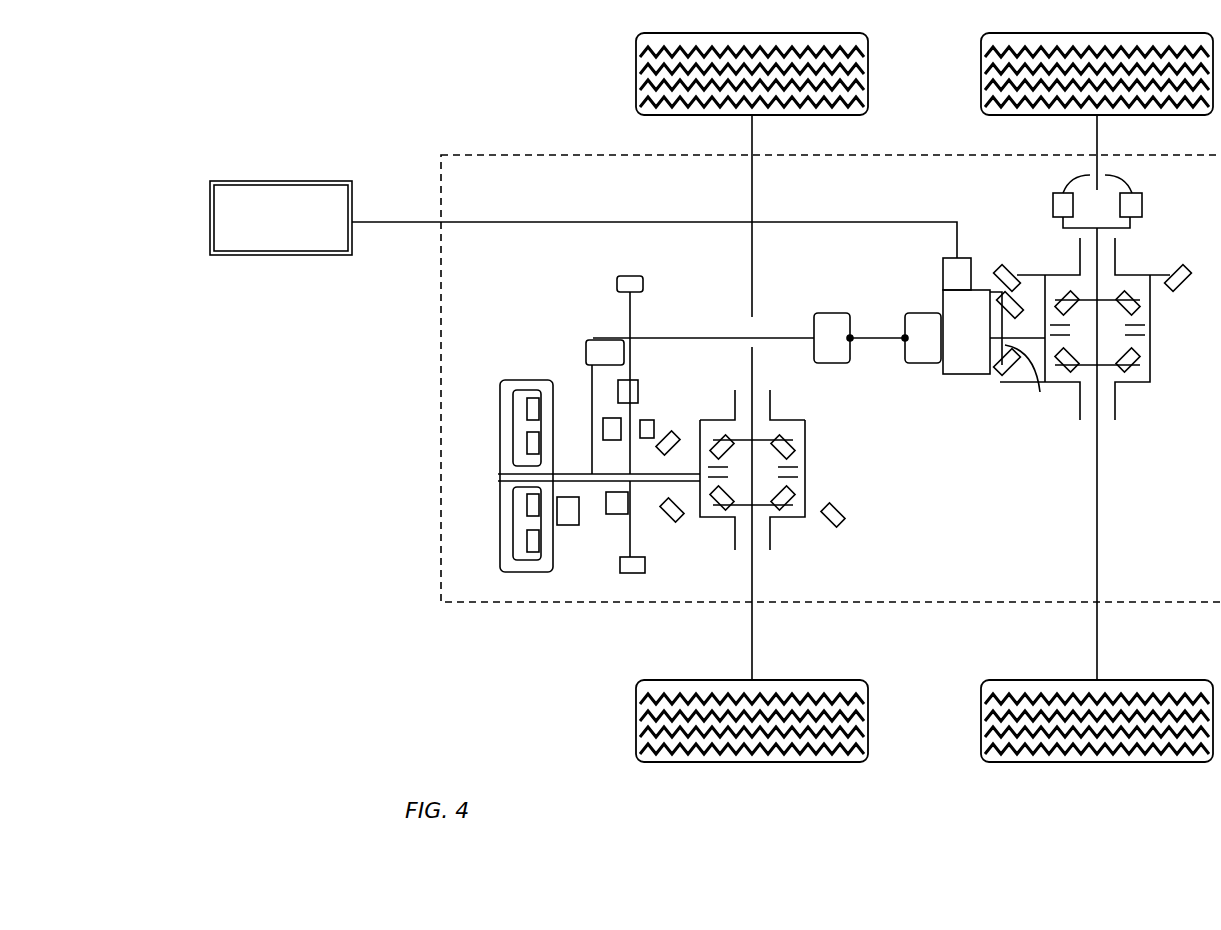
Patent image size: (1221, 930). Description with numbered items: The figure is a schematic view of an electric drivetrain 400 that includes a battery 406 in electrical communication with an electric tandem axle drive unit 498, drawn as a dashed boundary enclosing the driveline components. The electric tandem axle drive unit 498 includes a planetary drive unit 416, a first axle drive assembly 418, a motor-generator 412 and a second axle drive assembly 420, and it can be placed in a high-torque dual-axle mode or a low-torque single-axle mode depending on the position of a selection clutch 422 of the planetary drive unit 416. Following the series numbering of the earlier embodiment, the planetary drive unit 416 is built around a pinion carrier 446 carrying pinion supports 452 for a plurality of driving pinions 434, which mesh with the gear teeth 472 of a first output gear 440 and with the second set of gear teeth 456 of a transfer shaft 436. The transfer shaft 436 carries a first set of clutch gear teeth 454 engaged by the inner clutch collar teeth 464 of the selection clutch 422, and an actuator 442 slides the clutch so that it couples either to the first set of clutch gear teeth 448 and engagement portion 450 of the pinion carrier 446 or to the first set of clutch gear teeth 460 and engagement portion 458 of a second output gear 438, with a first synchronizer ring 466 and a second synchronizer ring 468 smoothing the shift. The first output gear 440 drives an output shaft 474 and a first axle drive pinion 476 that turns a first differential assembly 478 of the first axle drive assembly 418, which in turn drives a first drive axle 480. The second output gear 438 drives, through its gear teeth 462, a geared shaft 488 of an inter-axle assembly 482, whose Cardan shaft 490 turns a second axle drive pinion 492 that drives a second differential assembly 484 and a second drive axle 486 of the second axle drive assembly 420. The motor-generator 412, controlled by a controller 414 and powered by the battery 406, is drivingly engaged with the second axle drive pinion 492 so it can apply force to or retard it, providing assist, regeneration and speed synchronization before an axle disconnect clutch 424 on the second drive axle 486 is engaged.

The electric drivetrain 400 is at (196, 76).
The battery 406 is at (265, 181).
The electric tandem axle drive unit 498 is at (436, 150).
The planetary drive unit 416 is at (493, 240).
The selection clutch 422 is at (573, 257).
The first drive axle 480 is at (752, 213).
The inter-axle assembly 482 is at (851, 235).
The controller 414 is at (968, 265).
The axle disconnect clutch 424 is at (1128, 180).
The actuator 442 is at (595, 340).
The second axle drive assembly 420 is at (632, 322).
The gear teeth 462 is at (645, 375).
The geared shaft 488 is at (777, 336).
The Cardan shaft 490 is at (868, 330).
The first synchronizer ring 466 is at (572, 420).
The first set of clutch gear teeth of pinion carrier 448 is at (522, 385).
The second output gear 438 is at (638, 390).
The engagement portion of second output gear 458 is at (665, 422).
The output shaft 474 is at (665, 460).
The pinion supports 452 is at (527, 428).
The first axle drive pinion 476 is at (765, 440).
The first differential assembly 478 is at (813, 460).
The second set of gear teeth 456 is at (530, 497).
The first output gear 440 is at (500, 495).
The inner clutch collar teeth 464 is at (630, 500).
The first set of clutch gear teeth of second output gear 460 is at (647, 562).
The gear teeth of first output gear 472 is at (510, 560).
The driving pinions 434 is at (540, 570).
The pinion carrier 446 is at (563, 572).
The first set of clutch gear teeth of transfer shaft 454 is at (585, 555).
The engagement portion of pinion carrier 450 is at (548, 555).
The second synchronizer ring 468 is at (595, 548).
The transfer shaft 436 is at (640, 585).
The first axle drive assembly 418 is at (779, 578).
The motor-generator 412 is at (981, 378).
The second axle drive pinion 492 is at (1045, 365).
The second differential assembly 484 is at (1152, 365).
The second drive axle 486 is at (1097, 520).